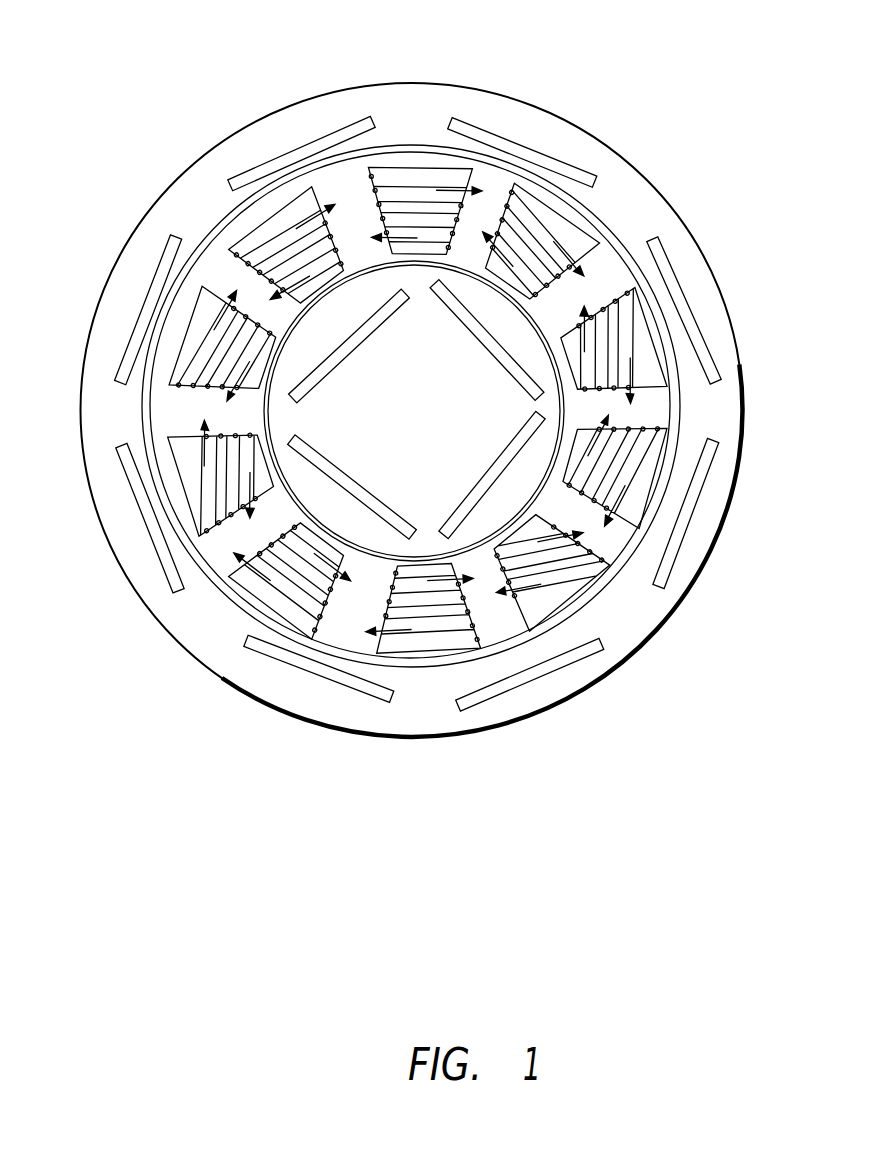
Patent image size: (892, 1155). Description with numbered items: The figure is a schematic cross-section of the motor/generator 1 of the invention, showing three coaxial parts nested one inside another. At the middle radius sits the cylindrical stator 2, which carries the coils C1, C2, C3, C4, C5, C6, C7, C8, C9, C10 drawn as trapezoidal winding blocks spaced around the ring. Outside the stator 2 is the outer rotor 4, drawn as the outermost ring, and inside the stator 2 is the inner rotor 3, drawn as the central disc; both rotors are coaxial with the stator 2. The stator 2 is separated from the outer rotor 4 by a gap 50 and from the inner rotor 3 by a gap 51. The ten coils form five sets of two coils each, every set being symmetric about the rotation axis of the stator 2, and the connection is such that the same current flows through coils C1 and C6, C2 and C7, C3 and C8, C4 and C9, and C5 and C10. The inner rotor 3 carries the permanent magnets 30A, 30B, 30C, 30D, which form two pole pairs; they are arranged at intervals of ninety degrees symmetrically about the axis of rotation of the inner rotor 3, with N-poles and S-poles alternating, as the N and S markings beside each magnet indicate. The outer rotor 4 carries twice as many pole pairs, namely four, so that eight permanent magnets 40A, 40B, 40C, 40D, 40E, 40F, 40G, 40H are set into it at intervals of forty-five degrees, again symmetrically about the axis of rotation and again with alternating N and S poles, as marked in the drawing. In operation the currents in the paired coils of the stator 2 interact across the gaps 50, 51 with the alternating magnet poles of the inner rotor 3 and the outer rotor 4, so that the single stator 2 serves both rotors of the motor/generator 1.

The motor/generator 1 is at (575, 101).
The stator 2 is at (617, 257).
The inner rotor 3 is at (347, 308).
The outer rotor 4 is at (346, 87).
The gap 50 is at (603, 226).
The gap 51 is at (467, 273).
The permanent magnet 30A is at (517, 353).
The permanent magnet 30B is at (523, 463).
The permanent magnet 30C is at (380, 520).
The permanent magnet 30D is at (312, 377).
The permanent magnet 40A is at (672, 263).
The permanent magnet 40B is at (667, 575).
The permanent magnet 40C is at (593, 657).
The permanent magnet 40D is at (363, 700).
The permanent magnet 40E is at (160, 580).
The permanent magnet 40F is at (117, 347).
The permanent magnet 40G is at (265, 157).
The permanent magnet 40H is at (490, 130).
The coil C1 is at (617, 318).
The coil C2 is at (520, 190).
The coil C3 is at (452, 190).
The coil C4 is at (300, 232).
The coil C5 is at (212, 327).
The coil C6 is at (197, 468).
The coil C7 is at (270, 588).
The coil C8 is at (435, 627).
The coil C9 is at (567, 577).
The coil C10 is at (653, 443).